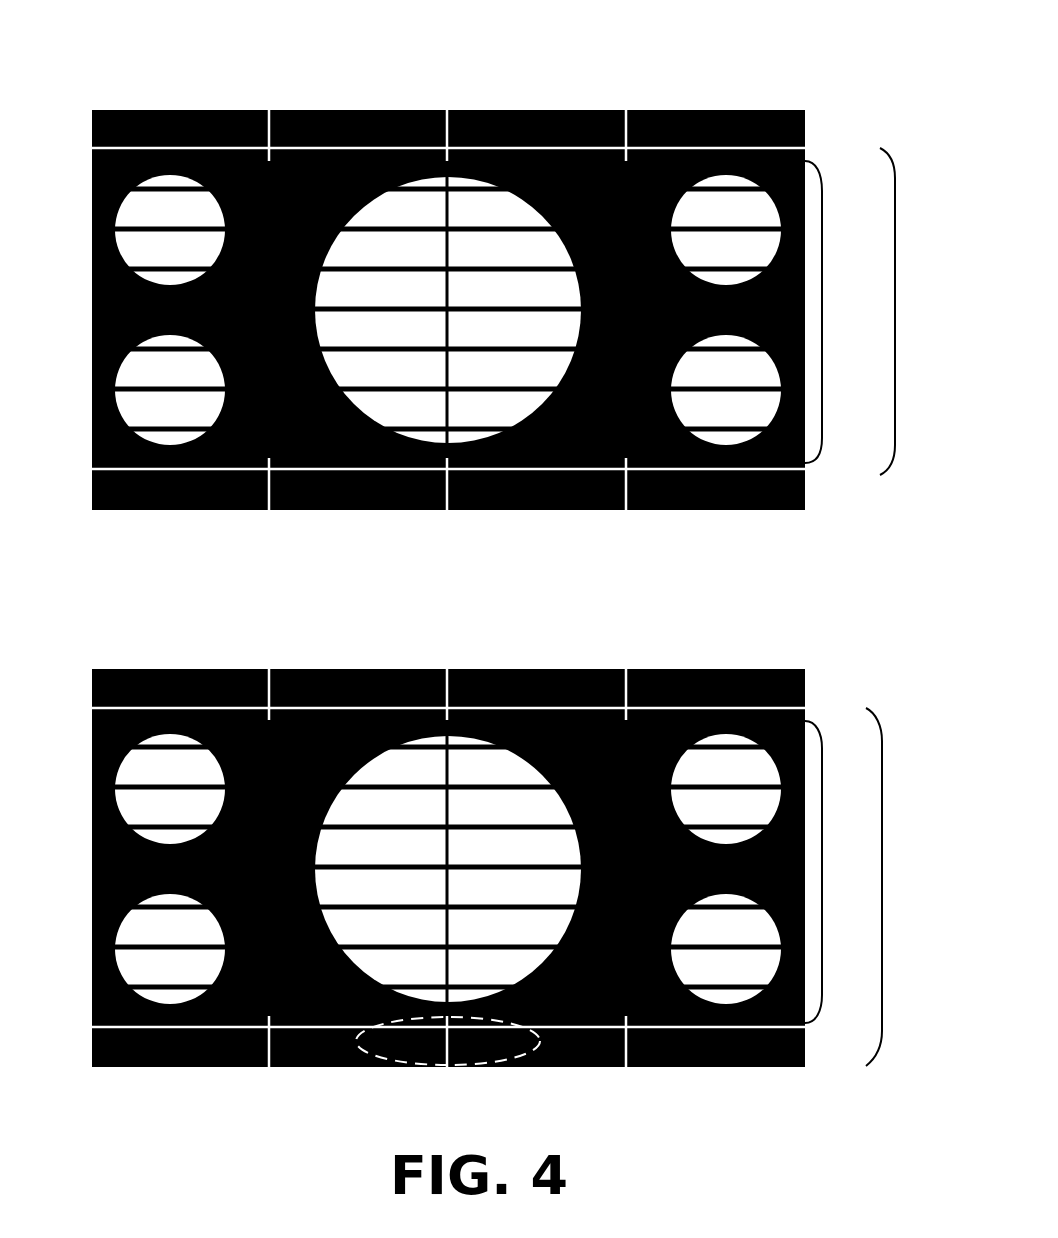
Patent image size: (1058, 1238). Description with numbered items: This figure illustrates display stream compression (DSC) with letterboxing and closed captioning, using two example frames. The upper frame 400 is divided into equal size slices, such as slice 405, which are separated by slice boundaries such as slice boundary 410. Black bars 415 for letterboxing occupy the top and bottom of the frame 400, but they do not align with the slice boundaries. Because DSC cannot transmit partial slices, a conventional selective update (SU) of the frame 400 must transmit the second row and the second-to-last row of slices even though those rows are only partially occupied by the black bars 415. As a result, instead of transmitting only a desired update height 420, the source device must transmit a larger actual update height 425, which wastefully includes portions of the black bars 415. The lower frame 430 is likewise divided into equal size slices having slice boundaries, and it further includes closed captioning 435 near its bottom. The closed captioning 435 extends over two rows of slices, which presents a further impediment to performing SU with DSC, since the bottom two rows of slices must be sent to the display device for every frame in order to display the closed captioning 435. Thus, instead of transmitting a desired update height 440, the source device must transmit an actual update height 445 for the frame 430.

The frame 400 is at (415, 283).
The slice 405 is at (83, 272).
The slice boundary 410 is at (83, 180).
The black bars 415 is at (83, 118).
The desired update height 420 is at (814, 303).
The actual update height 425 is at (887, 303).
The frame 430 is at (448, 844).
The closed captioning 435 is at (524, 1030).
The desired update height 440 is at (814, 863).
The actual update height 445 is at (874, 880).